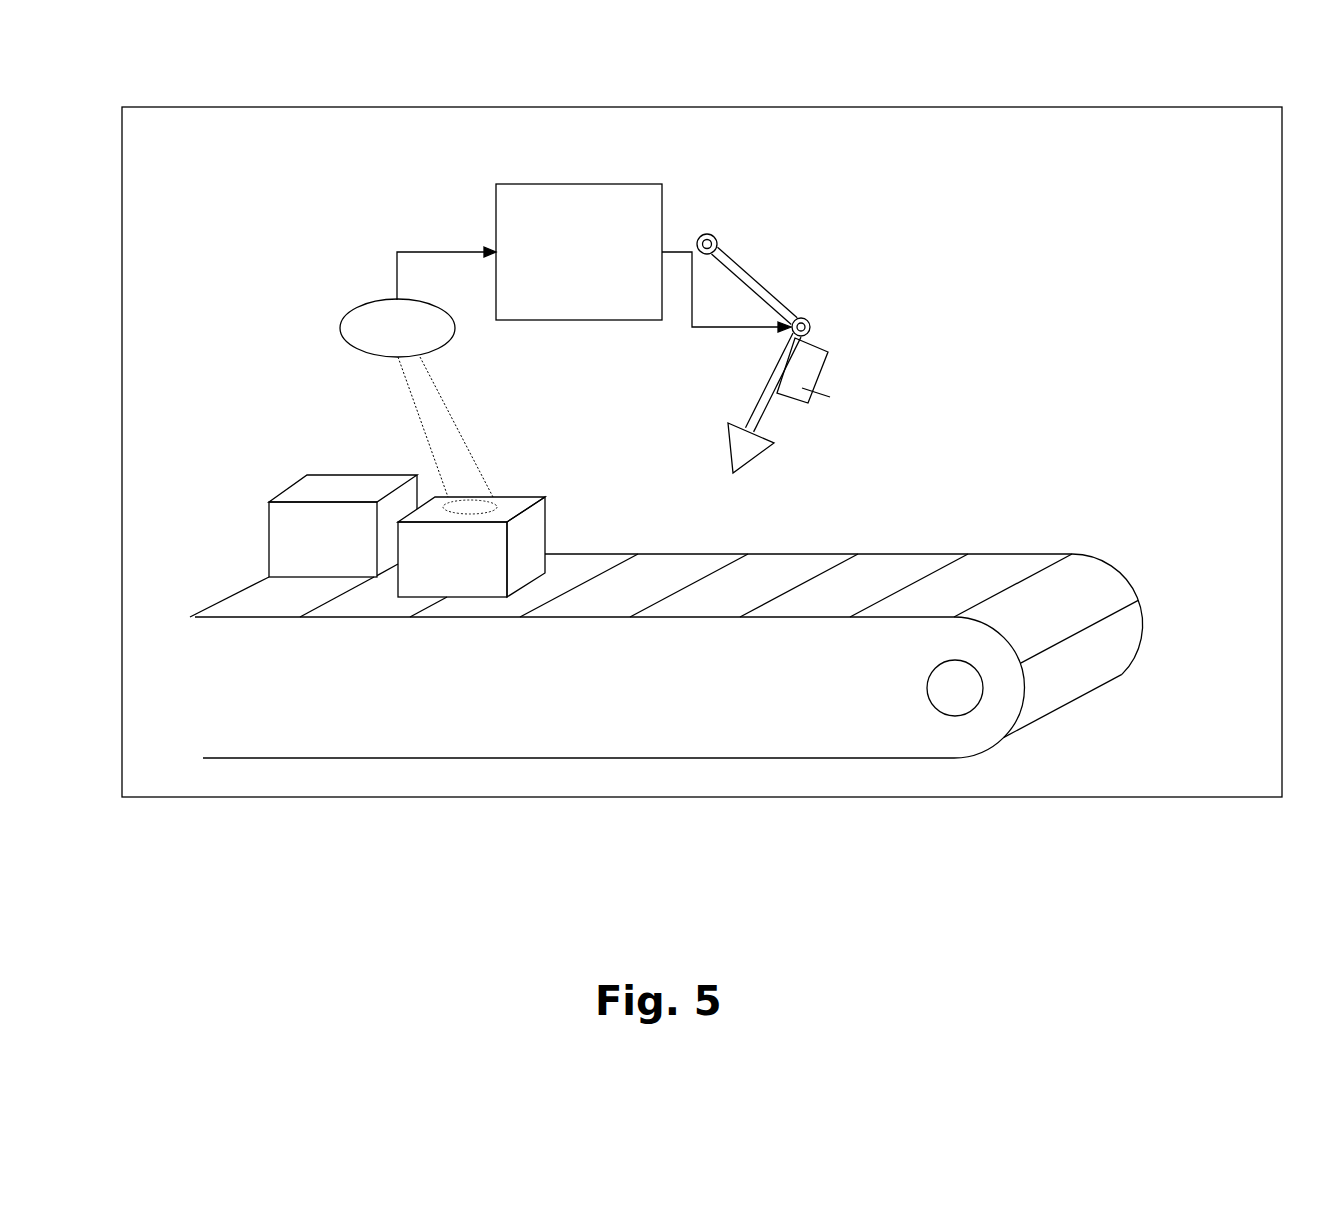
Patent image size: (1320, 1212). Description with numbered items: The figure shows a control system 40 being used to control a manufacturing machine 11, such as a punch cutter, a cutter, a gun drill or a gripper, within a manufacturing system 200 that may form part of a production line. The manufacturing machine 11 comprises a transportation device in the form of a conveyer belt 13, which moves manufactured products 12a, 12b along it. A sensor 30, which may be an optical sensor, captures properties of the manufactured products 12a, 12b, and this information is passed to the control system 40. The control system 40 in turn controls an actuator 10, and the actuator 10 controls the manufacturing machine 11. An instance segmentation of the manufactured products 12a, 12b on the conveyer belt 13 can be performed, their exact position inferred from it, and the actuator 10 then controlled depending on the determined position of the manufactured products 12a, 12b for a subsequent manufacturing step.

The manufacturing system 200 is at (610, 803).
The control system 40 is at (482, 192).
The sensor 30 is at (340, 332).
The manufacturing machine 11 is at (768, 295).
The actuator 10 is at (827, 368).
The conveyer belt 13 is at (1150, 588).
The manufactured product 12b is at (283, 490).
The manufactured product 12a is at (553, 527).